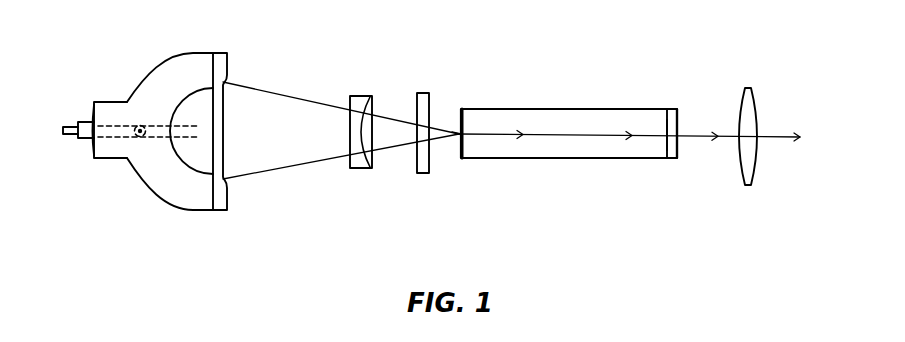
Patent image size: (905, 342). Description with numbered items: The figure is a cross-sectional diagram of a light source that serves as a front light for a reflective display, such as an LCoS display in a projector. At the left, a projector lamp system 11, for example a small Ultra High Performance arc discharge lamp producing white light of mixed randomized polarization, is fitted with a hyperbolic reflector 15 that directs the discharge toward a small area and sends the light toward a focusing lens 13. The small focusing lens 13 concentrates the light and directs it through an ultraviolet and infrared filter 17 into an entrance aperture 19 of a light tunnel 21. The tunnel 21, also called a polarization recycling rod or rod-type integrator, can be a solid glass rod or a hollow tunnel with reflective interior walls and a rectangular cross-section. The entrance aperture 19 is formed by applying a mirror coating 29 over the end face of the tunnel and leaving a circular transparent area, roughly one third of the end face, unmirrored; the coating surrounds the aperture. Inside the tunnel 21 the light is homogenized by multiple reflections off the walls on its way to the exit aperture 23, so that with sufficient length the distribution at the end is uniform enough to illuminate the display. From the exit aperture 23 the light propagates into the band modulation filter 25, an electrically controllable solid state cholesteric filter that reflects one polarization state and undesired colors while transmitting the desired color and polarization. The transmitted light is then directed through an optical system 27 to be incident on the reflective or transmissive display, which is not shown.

The projector lamp system 11 is at (172, 228).
The focusing lens 13 is at (359, 95).
The reflector 15 is at (141, 86).
The ultraviolet and infrared filter 17 is at (427, 92).
The entrance aperture 19 is at (458, 140).
The light tunnel 21 is at (577, 108).
The exit aperture 23 is at (665, 141).
The band modulation filter 25 is at (673, 108).
The optical system 27 is at (755, 98).
The mirror coating 29 is at (463, 146).